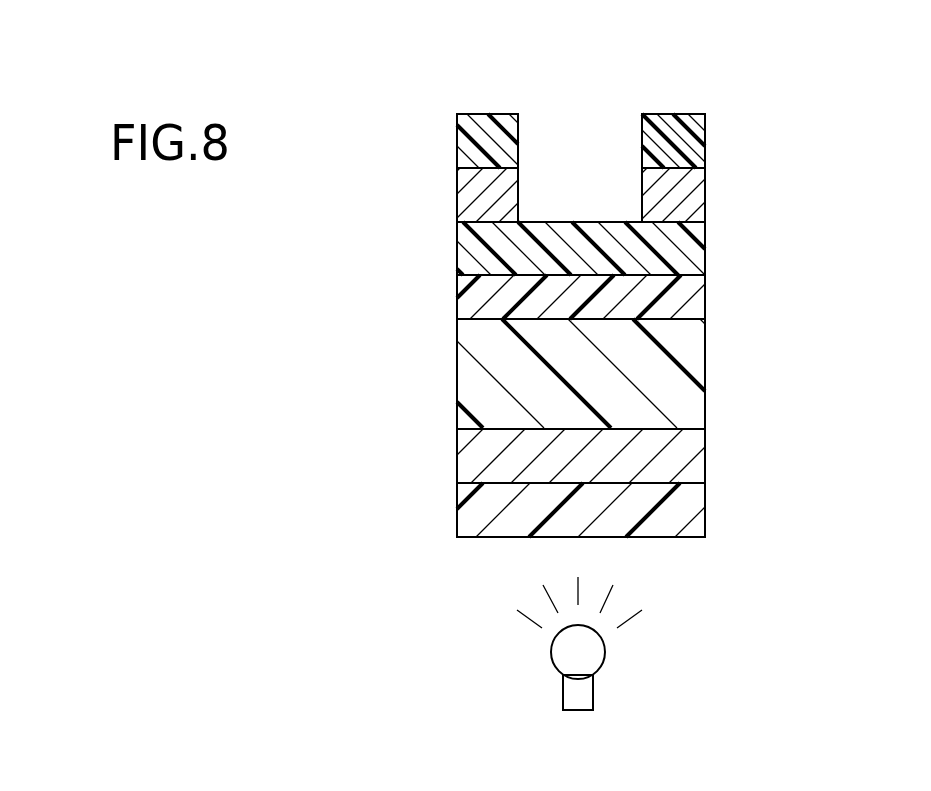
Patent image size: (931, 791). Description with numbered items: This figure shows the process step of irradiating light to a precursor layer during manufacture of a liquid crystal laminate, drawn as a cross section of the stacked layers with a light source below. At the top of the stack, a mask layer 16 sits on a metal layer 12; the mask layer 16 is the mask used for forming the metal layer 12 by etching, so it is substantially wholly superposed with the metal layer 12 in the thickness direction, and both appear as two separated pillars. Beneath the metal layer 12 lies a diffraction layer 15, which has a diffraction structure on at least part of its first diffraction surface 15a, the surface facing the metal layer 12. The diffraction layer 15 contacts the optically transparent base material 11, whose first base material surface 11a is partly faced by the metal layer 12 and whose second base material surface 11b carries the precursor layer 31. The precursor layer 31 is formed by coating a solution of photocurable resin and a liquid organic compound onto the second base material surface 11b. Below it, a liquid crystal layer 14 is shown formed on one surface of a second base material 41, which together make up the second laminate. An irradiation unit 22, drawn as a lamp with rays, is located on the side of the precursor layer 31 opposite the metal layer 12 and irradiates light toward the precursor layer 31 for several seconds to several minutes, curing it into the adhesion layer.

The mask layer 16 is at (705, 147).
The metal layer 12 is at (705, 197).
The diffraction layer 15 is at (705, 246).
The first diffraction surface 15a is at (478, 222).
The base material 11 is at (705, 300).
The first base material surface 11a is at (478, 275).
The second base material surface 11b is at (482, 319).
The precursor layer 31 is at (705, 361).
The liquid crystal layer 14 is at (705, 461).
The second base material 41 is at (705, 503).
The irradiation unit 22 is at (593, 691).